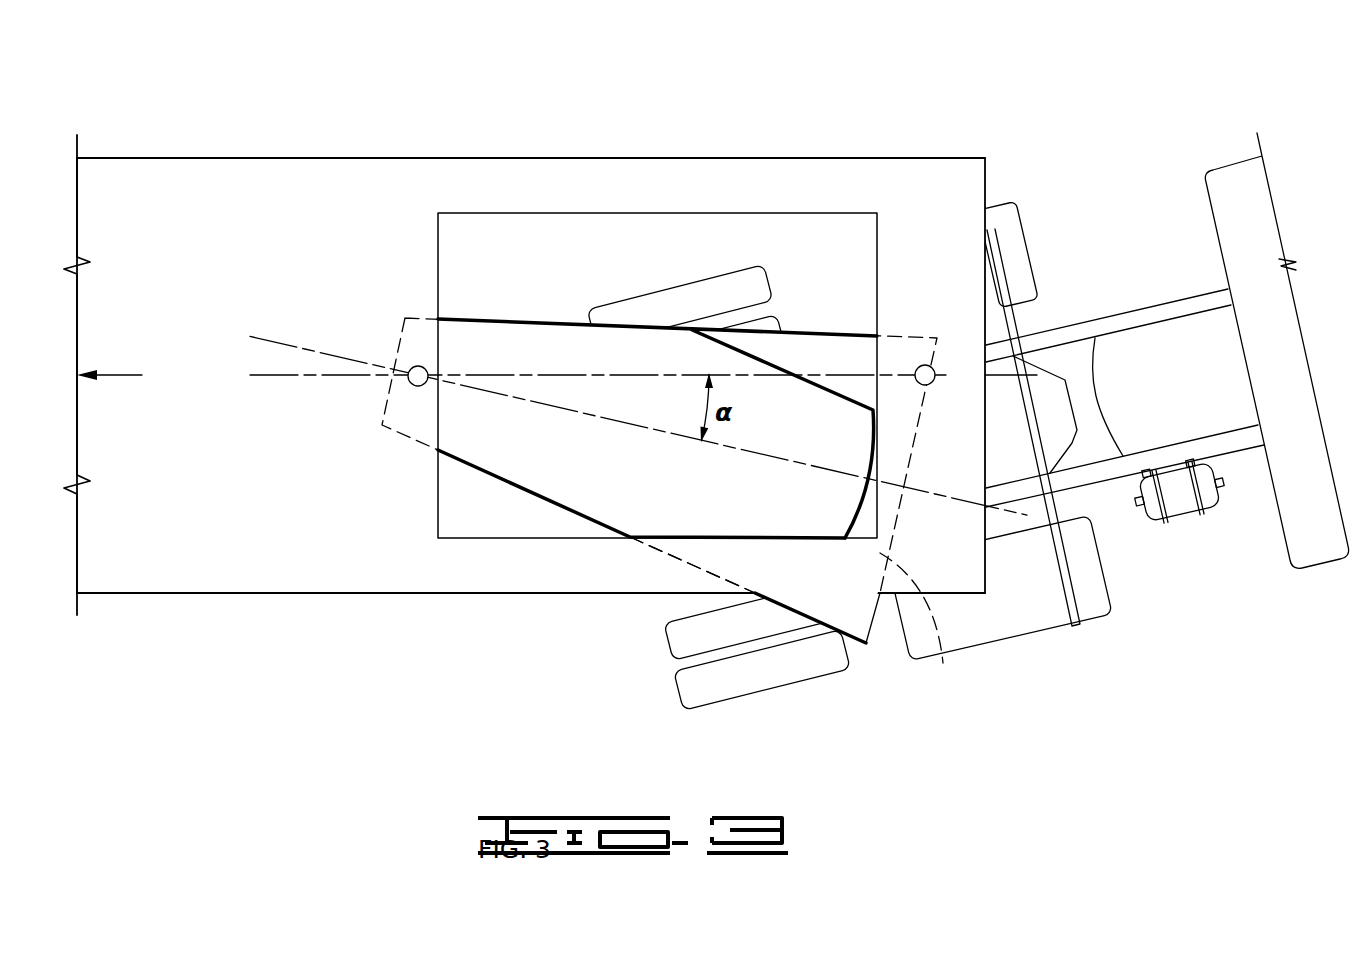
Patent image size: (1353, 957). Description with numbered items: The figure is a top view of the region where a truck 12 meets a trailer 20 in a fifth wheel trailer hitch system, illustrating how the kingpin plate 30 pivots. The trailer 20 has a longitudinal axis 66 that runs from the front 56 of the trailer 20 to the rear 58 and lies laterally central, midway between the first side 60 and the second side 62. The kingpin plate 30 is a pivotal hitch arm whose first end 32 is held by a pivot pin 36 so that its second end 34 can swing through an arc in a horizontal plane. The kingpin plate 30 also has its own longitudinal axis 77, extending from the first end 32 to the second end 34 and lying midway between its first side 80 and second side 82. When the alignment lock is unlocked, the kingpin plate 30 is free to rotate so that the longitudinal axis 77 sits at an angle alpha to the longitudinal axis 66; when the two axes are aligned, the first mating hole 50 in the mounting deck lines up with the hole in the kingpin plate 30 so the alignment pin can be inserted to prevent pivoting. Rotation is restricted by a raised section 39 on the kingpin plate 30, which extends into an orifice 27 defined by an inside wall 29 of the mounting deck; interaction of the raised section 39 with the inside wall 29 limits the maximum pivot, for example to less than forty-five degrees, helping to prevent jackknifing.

The truck 12 is at (1213, 160).
The trailer 20 is at (194, 158).
The orifice 27 is at (555, 276).
The inside wall 29 is at (483, 217).
The kingpin plate 30 is at (487, 442).
The first end 32 is at (400, 335).
The second end 34 is at (945, 667).
The pivot pin 36 is at (412, 385).
The raised section 39 is at (547, 477).
The first mating hole 50 is at (925, 366).
The front 56 is at (987, 567).
The rear 58 is at (124, 377).
The first side 60 is at (752, 157).
The second side 62 is at (197, 593).
The longitudinal axis 66 is at (960, 376).
The longitudinal axis 77 is at (944, 498).
The first side 80 is at (834, 333).
The second side 82 is at (673, 560).